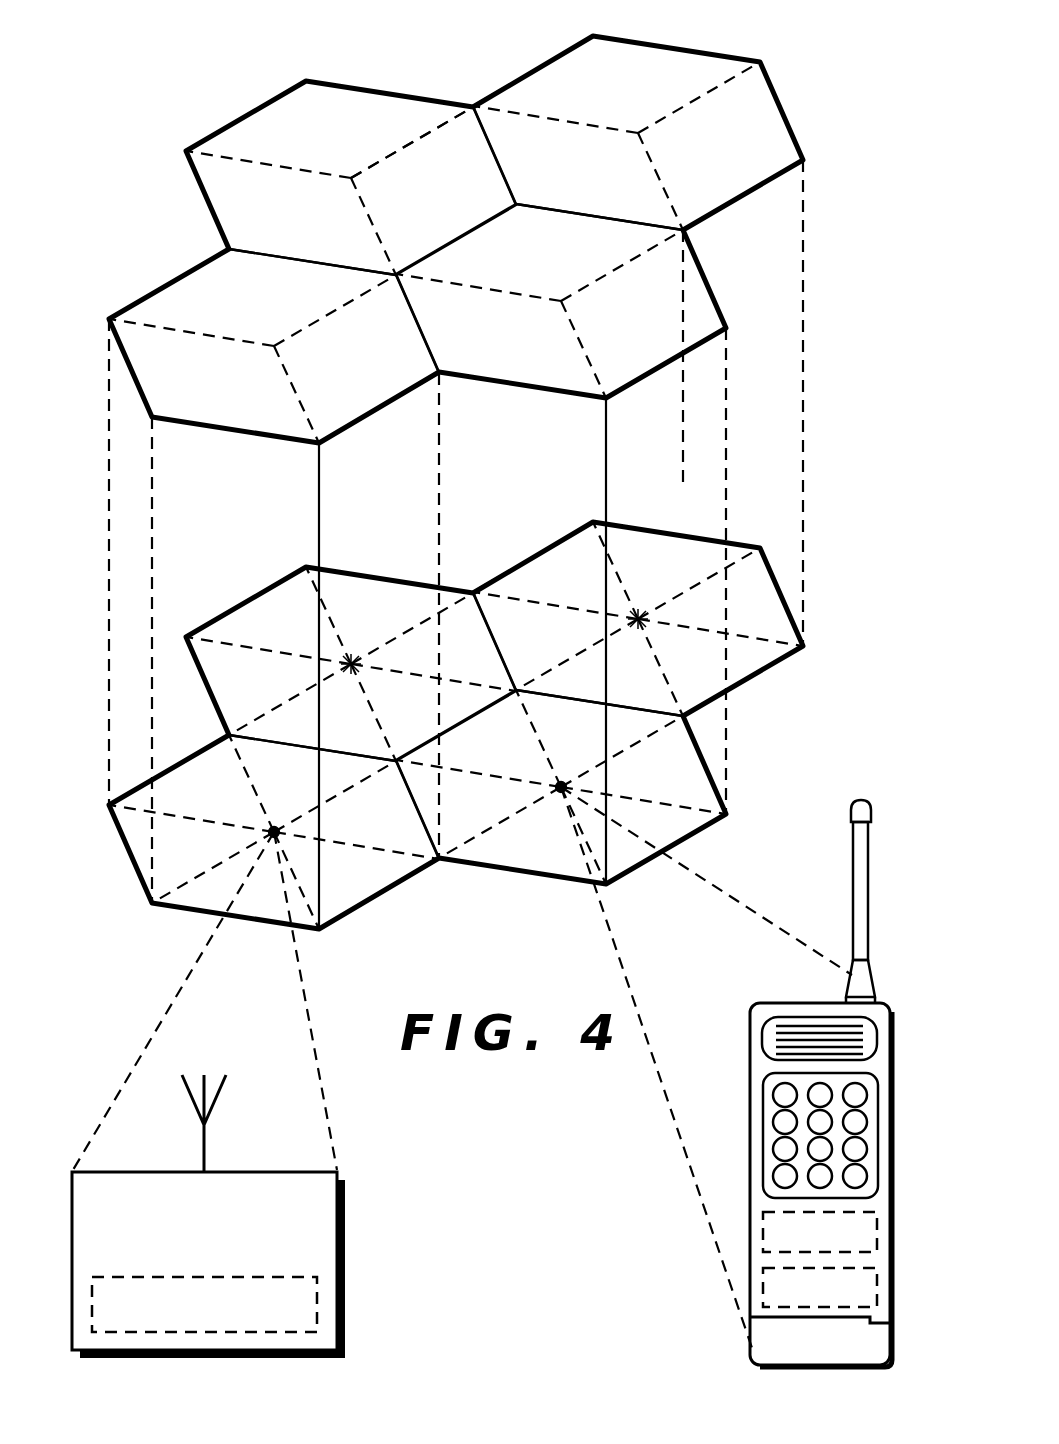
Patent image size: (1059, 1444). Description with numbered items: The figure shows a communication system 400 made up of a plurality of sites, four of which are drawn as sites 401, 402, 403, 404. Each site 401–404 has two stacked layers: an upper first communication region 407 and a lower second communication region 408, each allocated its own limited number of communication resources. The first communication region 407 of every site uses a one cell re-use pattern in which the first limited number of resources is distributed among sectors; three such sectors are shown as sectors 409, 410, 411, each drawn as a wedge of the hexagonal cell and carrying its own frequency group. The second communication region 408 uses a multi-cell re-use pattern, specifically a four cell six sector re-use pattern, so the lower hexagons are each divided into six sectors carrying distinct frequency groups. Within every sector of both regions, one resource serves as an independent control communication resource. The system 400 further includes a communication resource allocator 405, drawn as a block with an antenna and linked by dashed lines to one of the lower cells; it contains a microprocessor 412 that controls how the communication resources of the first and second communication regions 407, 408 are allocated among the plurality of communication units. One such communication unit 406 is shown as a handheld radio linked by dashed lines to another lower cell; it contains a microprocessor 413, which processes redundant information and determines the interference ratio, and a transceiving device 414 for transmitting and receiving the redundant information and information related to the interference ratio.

The communication system 400 is at (862, 736).
The site 401 is at (661, 46).
The site 402 is at (363, 90).
The site 403 is at (167, 285).
The site 404 is at (520, 386).
The communication resource allocator 405 is at (343, 1229).
The communication unit 406 is at (750, 1075).
The first communication region 407 is at (778, 100).
The second communication region 408 is at (697, 830).
The sector F1 409 is at (302, 103).
The sector F2 410 is at (232, 197).
The sector F3 411 is at (462, 133).
The microprocessor 412 is at (320, 1296).
The microprocessor 413 is at (770, 1233).
The transceiving device 414 is at (770, 1287).